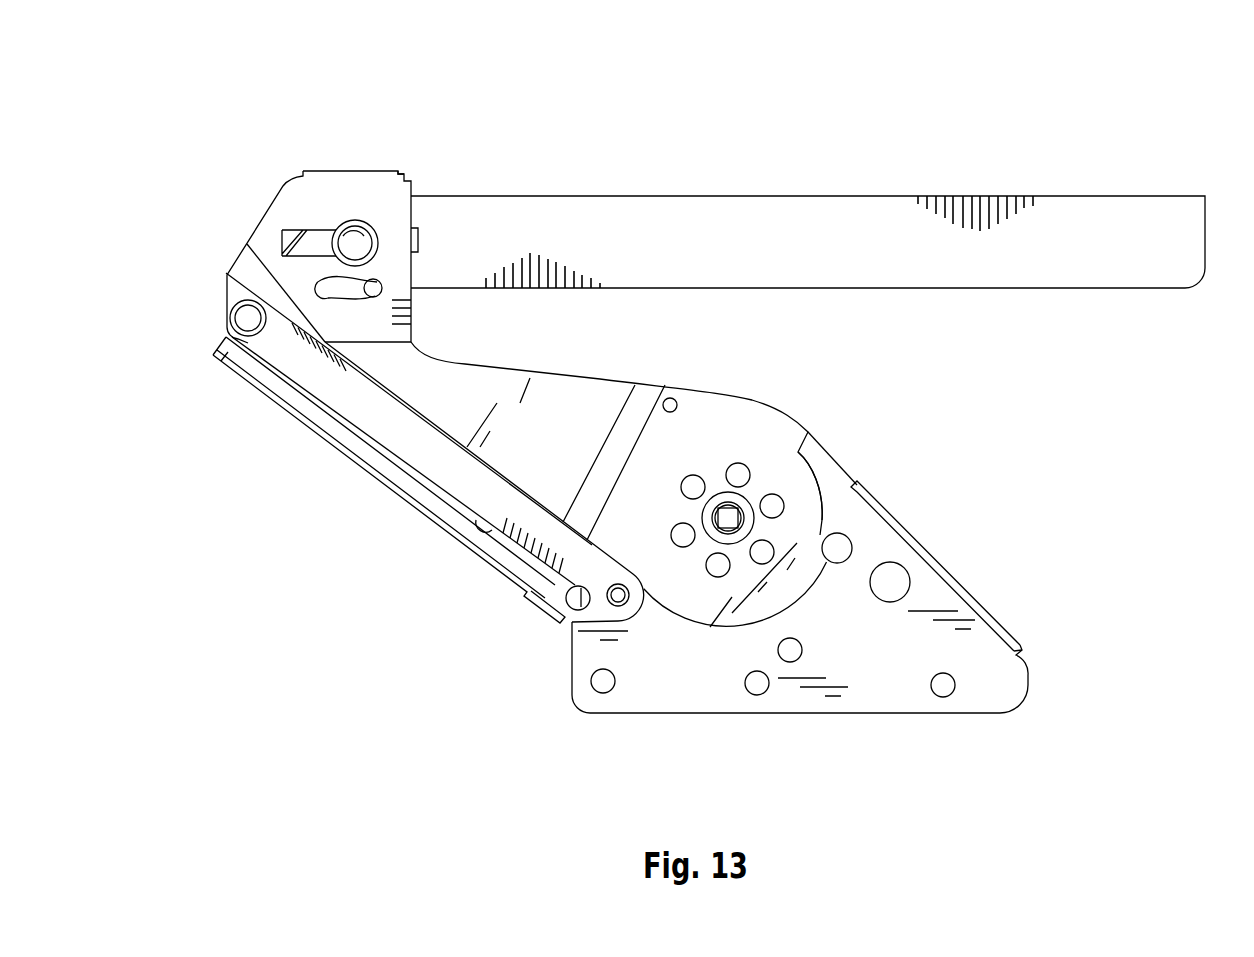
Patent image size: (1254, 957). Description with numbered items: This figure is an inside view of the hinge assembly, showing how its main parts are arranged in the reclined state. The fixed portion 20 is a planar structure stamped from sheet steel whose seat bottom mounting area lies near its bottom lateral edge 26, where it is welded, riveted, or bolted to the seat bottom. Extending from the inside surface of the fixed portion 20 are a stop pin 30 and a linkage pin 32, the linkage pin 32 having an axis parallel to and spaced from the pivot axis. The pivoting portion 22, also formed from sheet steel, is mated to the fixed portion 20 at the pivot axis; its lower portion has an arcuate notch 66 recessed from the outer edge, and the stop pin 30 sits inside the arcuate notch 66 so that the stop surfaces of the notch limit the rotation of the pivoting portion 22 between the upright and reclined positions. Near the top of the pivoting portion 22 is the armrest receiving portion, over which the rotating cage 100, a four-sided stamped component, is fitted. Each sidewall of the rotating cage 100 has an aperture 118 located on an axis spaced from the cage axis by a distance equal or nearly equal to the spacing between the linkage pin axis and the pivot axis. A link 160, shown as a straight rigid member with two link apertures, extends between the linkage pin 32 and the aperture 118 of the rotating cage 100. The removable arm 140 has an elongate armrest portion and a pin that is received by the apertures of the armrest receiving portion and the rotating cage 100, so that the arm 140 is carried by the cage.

The rotating cage 100 is at (222, 190).
The removable arm 140 is at (942, 170).
The aperture 118 is at (240, 318).
The pivoting portion 22 is at (604, 365).
The arcuate notch 66 is at (828, 492).
The stop pin 30 is at (838, 548).
The link 160 is at (412, 455).
The linkage pin 32 is at (614, 600).
The fixed portion 20 is at (1048, 650).
The bottom lateral edge 26 is at (879, 715).